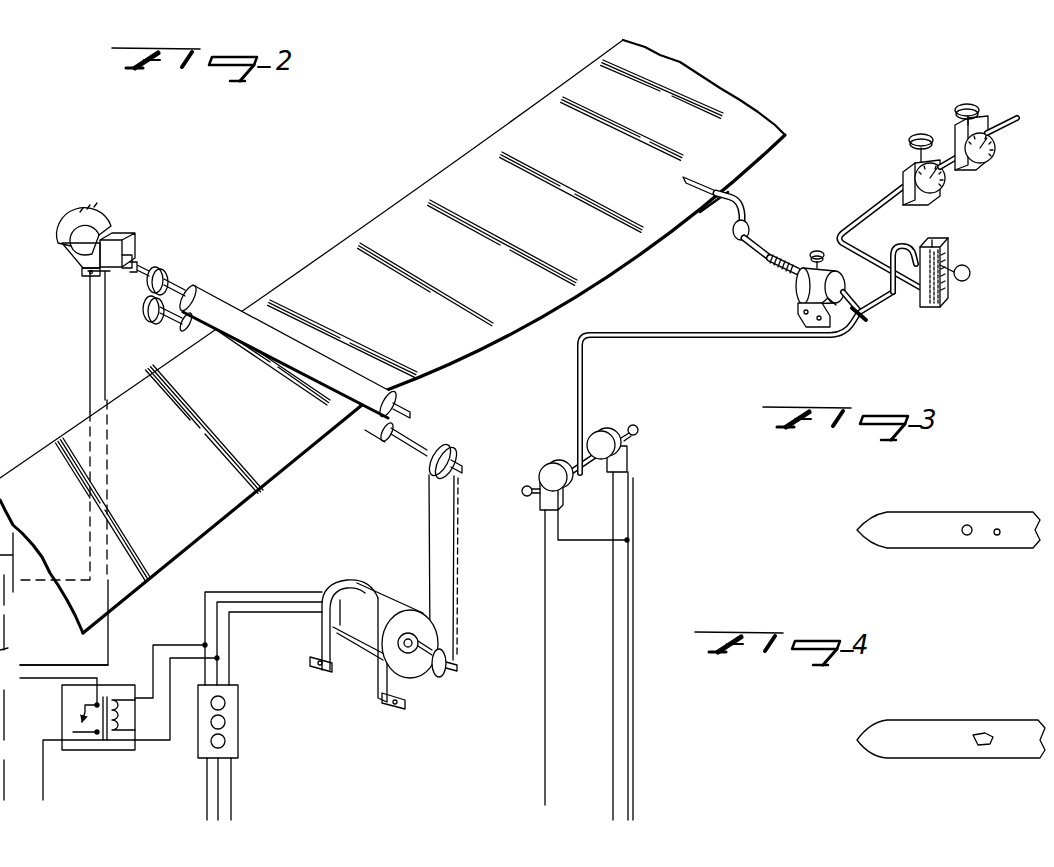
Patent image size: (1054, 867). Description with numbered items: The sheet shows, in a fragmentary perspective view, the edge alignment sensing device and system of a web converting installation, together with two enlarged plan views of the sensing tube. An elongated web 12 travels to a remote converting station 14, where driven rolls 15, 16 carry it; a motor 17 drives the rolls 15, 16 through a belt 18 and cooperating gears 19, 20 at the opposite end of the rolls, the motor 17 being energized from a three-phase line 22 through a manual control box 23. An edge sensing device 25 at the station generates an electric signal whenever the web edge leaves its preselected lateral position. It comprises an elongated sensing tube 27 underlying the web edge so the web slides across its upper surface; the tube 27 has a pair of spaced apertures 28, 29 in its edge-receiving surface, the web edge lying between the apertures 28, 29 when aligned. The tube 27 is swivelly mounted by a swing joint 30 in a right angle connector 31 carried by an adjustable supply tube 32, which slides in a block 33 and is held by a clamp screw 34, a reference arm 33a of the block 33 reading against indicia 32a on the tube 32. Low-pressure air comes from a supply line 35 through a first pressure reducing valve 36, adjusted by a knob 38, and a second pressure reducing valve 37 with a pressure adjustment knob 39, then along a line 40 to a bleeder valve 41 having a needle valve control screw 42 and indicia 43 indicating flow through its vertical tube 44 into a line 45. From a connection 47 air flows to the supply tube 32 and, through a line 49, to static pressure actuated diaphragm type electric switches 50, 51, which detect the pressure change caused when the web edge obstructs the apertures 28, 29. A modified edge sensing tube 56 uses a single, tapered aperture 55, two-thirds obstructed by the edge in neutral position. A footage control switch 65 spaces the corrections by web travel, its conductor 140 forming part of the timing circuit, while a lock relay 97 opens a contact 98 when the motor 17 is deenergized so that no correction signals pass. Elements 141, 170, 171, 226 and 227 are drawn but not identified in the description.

In FIG. 2, the web 12 is at (470, 342).
In FIG. 2, the converting station 14 is at (455, 160).
In FIG. 2, the roll 15 is at (403, 392).
In FIG. 2, the roll 16 is at (372, 425).
In FIG. 2, the motor 17 is at (367, 630).
In FIG. 2, the belt 18 is at (455, 558).
In FIG. 2, the gear 19 is at (149, 316).
In FIG. 2, the gear 20 is at (164, 274).
In FIG. 2, the 3-phase line 22 is at (238, 792).
In FIG. 2, the manual control box 23 is at (242, 718).
In FIG. 2, the edge sensing device 25 is at (710, 214).
In FIG. 2, the sensing tube 27 is at (737, 195).
In FIG. 3, the sensing tube 27 is at (1018, 535).
In FIG. 2, the aperture 28 is at (712, 190).
In FIG. 3, the aperture 28 is at (965, 536).
In FIG. 2, the aperture 29 is at (720, 192).
In FIG. 3, the aperture 29 is at (999, 529).
In FIG. 2, the swing joint 30 is at (749, 221).
In FIG. 2, the right angle connector 31 is at (734, 234).
In FIG. 2, the adjustable supply tube 32 is at (758, 245).
In FIG. 2, the indicia 32a is at (782, 258).
In FIG. 2, the block 33 is at (808, 281).
In FIG. 2, the reference arm 33a is at (800, 270).
In FIG. 2, the clamp screw 34 is at (820, 251).
In FIG. 2, the supply line 35 is at (1013, 123).
In FIG. 2, the pressure reducing valve 36 is at (986, 172).
In FIG. 2, the pressure reducing valve 37 is at (940, 197).
In FIG. 2, the knob 38 is at (969, 103).
In FIG. 2, the pressure adjustment knob 39 is at (921, 133).
In FIG. 2, the line 40 is at (882, 206).
In FIG. 2, the bleeder valve 41 is at (949, 292).
In FIG. 2, the needle valve control screw 42 is at (966, 268).
In FIG. 2, the indicia 43 is at (944, 310).
In FIG. 2, the vertical tube 44 is at (918, 272).
In FIG. 2, the line 45 is at (893, 252).
In FIG. 2, the connection 47 is at (857, 320).
In FIG. 2, the line 49 is at (710, 335).
In FIG. 2, the static pressure actuated diaphragm type electric switch 50 is at (613, 428).
In FIG. 2, the static pressure actuated diaphragm type electric switch 51 is at (540, 462).
In FIG. 4, the aperture 55 is at (973, 738).
In FIG. 4, the edge sensing tube 56 is at (1010, 726).
In FIG. 2, the footage control switch 65 is at (97, 205).
In FIG. 2, the lock relay 97 is at (120, 699).
In FIG. 2, the contact 98 is at (86, 735).
In FIG. 2, the conductor 140 is at (108, 378).
In FIG. 2, the post 141 is at (90, 342).
In FIG. 2, the post 170 is at (632, 700).
In FIG. 2, the post 171 is at (612, 631).
In FIG. 2, the wire 226 is at (582, 552).
In FIG. 2, the post 227 is at (546, 735).